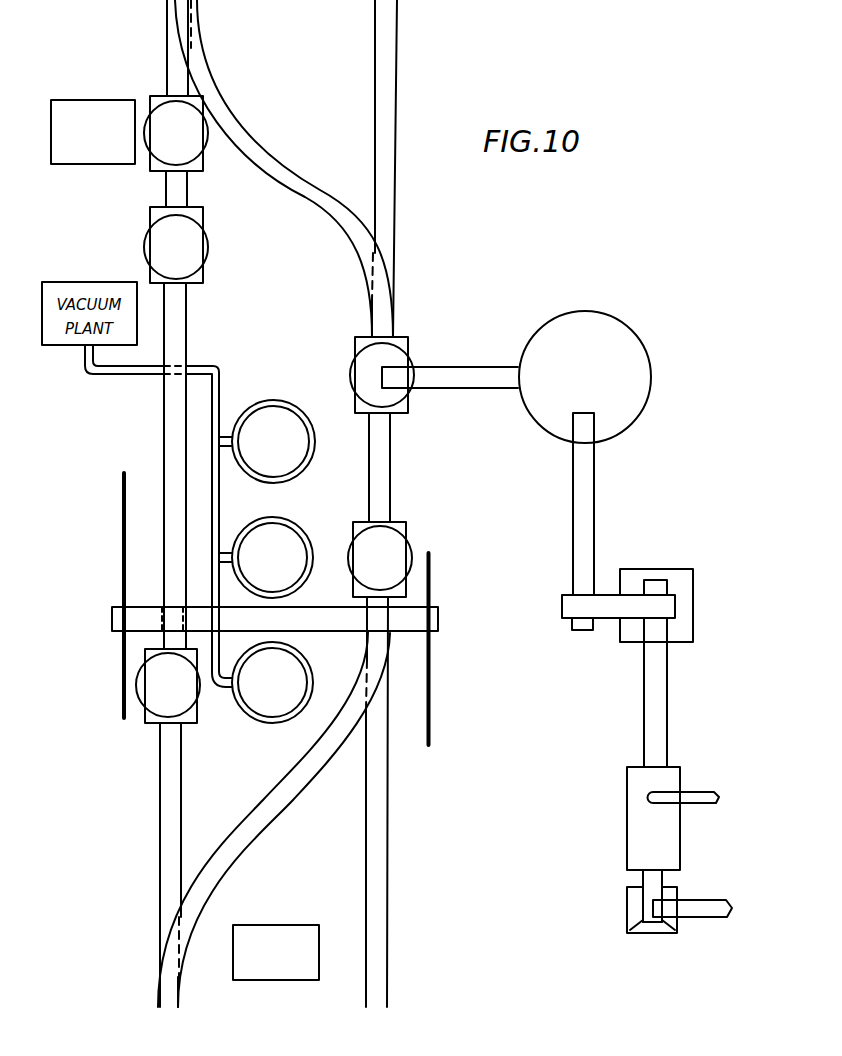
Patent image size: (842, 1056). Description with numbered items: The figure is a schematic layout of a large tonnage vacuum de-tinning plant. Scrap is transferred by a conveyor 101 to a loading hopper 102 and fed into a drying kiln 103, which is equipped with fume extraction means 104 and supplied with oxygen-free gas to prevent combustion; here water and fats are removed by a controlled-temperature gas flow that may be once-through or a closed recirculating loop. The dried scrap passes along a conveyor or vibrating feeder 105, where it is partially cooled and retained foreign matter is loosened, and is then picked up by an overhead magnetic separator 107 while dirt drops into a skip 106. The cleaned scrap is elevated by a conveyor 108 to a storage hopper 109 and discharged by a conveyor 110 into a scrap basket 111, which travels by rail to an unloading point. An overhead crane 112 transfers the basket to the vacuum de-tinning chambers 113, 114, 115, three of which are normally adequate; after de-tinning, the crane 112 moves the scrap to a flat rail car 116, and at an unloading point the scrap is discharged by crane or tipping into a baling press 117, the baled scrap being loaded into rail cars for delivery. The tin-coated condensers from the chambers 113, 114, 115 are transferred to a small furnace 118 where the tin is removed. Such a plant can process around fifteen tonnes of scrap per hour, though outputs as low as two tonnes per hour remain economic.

The conveyor 101 is at (690, 912).
The loading hopper 102 is at (627, 905).
The drying kiln 103 is at (640, 840).
The fume extraction means 104 is at (700, 798).
The conveyor or vibrating feeder 105 is at (654, 702).
The skip 106 is at (676, 563).
The overhead magnetic separator 107 is at (607, 614).
The conveyor 108 is at (572, 498).
The storage hopper 109 is at (604, 312).
The conveyor 110 is at (471, 367).
The scrap basket 111 is at (406, 338).
The overhead crane 112 is at (440, 617).
The vacuum de-tinning chamber 113 is at (293, 403).
The vacuum de-tinning chamber 114 is at (307, 530).
The vacuum de-tinning chamber 115 is at (309, 661).
The flat rail car 116 is at (155, 723).
The baling press 117 is at (93, 132).
The small furnace 118 is at (276, 952).